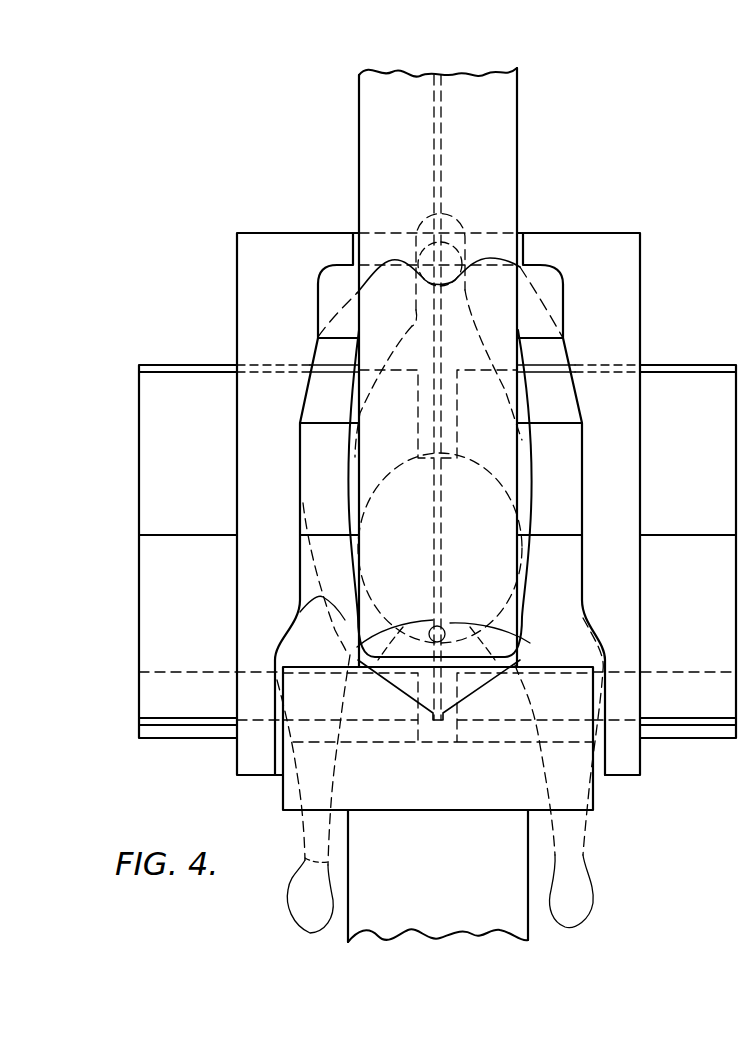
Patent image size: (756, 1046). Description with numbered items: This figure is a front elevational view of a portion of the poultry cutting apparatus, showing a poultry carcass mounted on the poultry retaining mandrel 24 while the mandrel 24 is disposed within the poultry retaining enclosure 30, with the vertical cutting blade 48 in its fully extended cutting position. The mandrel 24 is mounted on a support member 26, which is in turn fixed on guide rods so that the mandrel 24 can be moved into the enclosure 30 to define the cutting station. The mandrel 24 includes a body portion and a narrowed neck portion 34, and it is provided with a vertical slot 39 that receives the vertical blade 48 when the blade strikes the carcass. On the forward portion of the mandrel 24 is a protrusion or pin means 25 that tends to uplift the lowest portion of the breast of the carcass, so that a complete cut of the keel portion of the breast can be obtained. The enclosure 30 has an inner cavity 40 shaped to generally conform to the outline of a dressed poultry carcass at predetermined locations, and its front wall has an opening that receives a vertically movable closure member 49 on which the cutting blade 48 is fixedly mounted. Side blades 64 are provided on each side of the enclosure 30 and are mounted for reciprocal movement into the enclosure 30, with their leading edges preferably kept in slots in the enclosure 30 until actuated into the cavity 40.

The poultry retaining mandrel 24 is at (462, 252).
The protrusion or pin means 25 is at (443, 740).
The support member 26 is at (357, 855).
The poultry retaining enclosure 30 is at (633, 325).
The narrowed neck portion 34 is at (377, 390).
The vertical slot 39 is at (412, 326).
The inner cavity 40 is at (320, 302).
The cutting blade 48 is at (500, 165).
The vertically movable closure member 49 is at (500, 592).
The side blades 64 is at (138, 425).